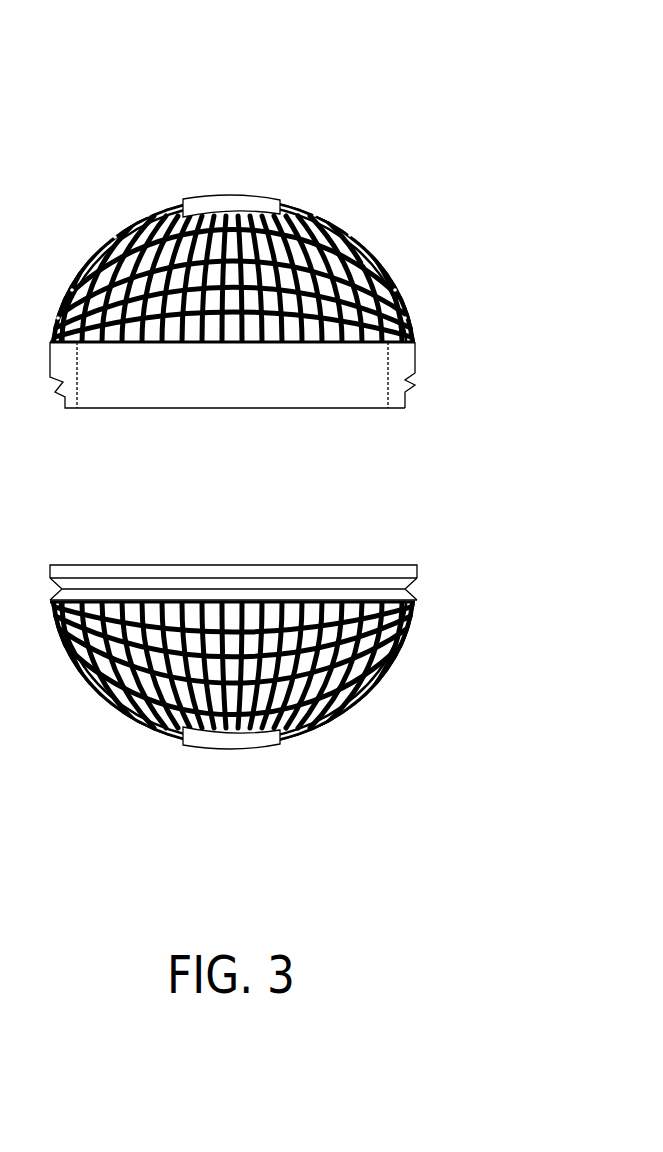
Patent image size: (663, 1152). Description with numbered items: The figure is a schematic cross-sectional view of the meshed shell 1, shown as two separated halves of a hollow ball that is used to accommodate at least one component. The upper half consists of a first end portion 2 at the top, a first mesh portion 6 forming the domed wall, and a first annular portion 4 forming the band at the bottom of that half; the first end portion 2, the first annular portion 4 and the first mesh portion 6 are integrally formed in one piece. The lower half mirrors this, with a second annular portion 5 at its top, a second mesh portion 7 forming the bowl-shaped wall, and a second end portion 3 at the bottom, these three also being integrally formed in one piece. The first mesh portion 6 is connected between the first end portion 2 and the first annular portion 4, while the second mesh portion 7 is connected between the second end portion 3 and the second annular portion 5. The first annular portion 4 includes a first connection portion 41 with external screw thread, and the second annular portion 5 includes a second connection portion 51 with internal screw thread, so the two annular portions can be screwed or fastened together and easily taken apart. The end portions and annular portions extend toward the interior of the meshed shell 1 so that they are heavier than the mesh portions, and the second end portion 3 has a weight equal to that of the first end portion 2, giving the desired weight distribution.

The meshed shell 1 is at (581, 43).
The first end portion 2 is at (238, 200).
The second end portion 3 is at (257, 742).
The first annular portion 4 is at (398, 358).
The first connection portion 41 is at (405, 391).
The second annular portion 5 is at (412, 590).
The second connection portion 51 is at (402, 578).
The first mesh portion 6 is at (348, 230).
The second mesh portion 7 is at (362, 703).